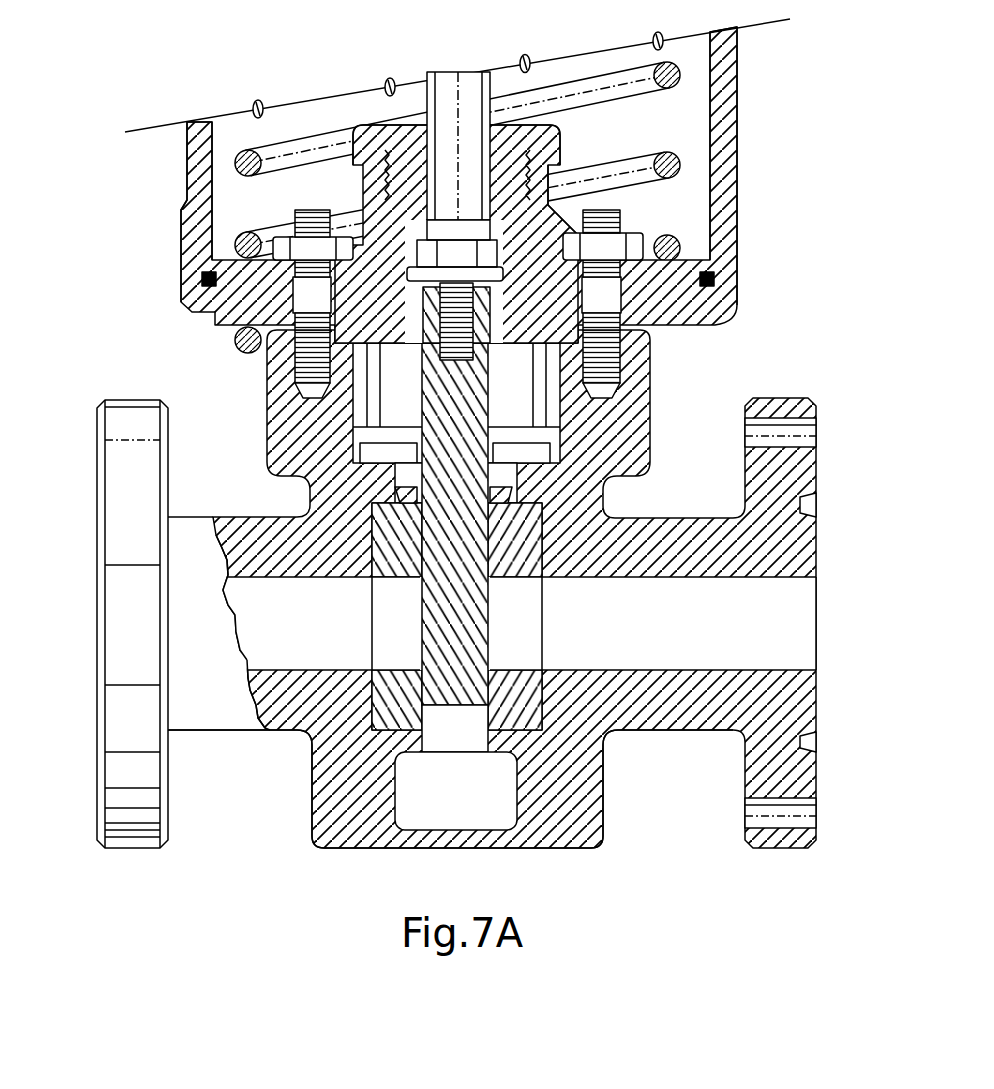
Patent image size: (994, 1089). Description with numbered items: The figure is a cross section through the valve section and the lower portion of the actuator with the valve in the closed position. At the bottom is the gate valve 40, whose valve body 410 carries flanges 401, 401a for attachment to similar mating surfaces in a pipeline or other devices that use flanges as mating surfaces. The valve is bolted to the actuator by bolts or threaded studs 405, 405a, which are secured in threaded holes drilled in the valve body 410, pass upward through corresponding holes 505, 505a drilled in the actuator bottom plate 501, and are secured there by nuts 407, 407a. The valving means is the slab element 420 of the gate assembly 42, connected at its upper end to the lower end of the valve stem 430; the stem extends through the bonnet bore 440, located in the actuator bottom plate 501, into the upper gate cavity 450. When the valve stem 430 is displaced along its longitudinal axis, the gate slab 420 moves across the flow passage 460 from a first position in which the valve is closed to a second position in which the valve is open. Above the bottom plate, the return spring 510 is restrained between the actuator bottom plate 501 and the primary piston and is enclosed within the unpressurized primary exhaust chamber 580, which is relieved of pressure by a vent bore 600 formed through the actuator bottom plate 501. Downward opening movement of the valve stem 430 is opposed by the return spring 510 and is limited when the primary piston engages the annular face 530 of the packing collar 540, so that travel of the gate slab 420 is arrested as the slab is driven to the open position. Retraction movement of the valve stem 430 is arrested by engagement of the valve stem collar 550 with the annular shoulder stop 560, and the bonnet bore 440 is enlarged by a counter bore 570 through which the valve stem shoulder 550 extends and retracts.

The gate valve 40 is at (334, 873).
The gate assembly 42 is at (358, 616).
The flange 401 is at (817, 782).
The flange 401a is at (97, 797).
The bolt or threaded stud 405 is at (618, 360).
The bolt or threaded stud 405a is at (296, 378).
The nut 407 is at (633, 237).
The nut 407a is at (285, 238).
The valve body 410 is at (650, 413).
The slab element 420 is at (490, 620).
The valve stem 430 is at (437, 134).
The bonnet bore 440 is at (428, 228).
The upper gate cavity 450 is at (368, 402).
The flow passage 460 is at (784, 613).
The actuator bottom plate 501 is at (716, 316).
The hole 505 is at (652, 326).
The hole 505a is at (300, 300).
The return spring 510 is at (213, 178).
The annular face 530 is at (543, 125).
The packing collar 540 is at (388, 133).
The valve stem collar 550 is at (500, 284).
The annular shoulder stop 560 is at (504, 262).
The counter bore 570 is at (402, 296).
The primary exhaust chamber 580 is at (688, 130).
The vent bore 600 is at (230, 336).